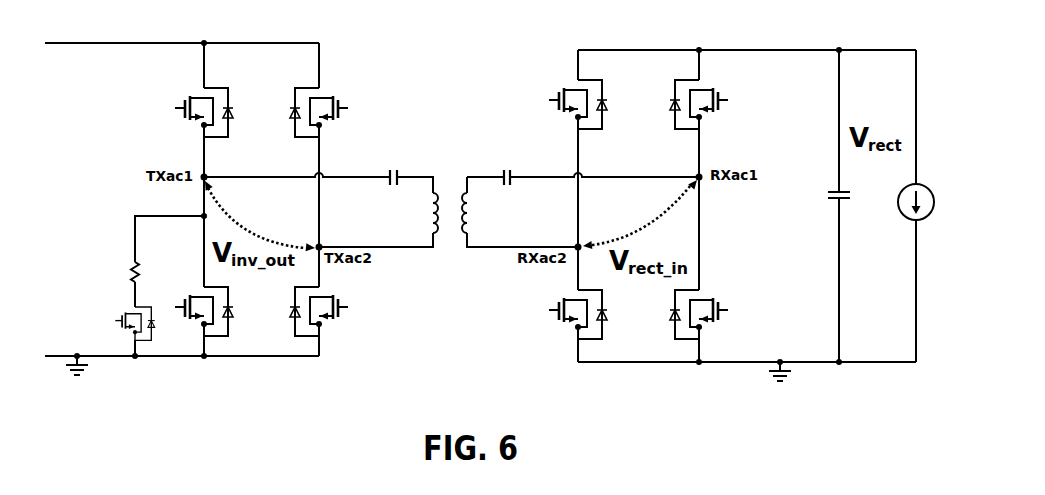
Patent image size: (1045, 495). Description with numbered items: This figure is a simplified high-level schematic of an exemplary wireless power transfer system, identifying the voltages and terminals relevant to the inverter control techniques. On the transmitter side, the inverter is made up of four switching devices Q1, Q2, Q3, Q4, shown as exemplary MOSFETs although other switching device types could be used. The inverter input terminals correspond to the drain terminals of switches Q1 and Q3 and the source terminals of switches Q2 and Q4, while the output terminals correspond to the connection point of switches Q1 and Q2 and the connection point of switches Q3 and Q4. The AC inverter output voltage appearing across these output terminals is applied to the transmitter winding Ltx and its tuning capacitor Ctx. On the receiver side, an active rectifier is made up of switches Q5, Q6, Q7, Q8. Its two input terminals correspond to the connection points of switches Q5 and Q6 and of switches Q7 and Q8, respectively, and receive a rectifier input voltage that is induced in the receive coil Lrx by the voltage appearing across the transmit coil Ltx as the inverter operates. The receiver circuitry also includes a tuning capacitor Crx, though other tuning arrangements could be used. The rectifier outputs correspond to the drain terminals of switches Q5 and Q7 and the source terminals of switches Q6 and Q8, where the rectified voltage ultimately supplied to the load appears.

The switching device Q1 is at (191, 110).
The switching device Q2 is at (221, 318).
The switching device Q3 is at (300, 110).
The switching device Q4 is at (326, 318).
The switch Q5 is at (595, 111).
The switch Q6 is at (598, 323).
The switch Q7 is at (706, 111).
The switch Q8 is at (707, 323).
The tuning capacitor Ctx is at (378, 187).
The transmitter winding Ltx is at (416, 213).
The receive coil Lrx is at (483, 213).
The tuning capacitor Crx is at (521, 187).